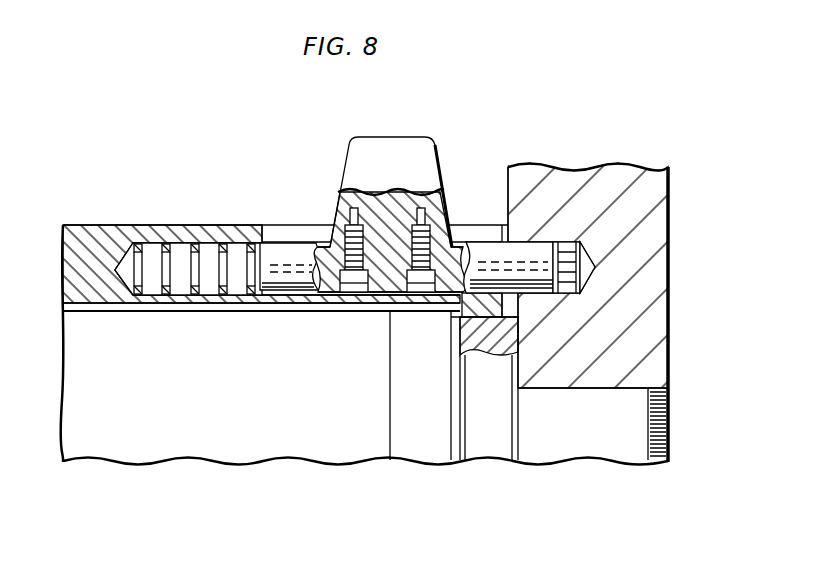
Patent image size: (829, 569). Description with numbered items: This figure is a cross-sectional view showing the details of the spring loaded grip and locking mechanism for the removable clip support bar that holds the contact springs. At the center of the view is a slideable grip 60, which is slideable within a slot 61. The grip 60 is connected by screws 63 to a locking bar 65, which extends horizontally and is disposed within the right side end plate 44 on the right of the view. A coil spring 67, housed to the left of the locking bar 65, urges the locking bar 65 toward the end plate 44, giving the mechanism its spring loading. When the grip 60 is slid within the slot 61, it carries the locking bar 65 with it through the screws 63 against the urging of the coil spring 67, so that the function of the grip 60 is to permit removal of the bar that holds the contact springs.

The right side end plate 44 is at (645, 338).
The slideable grip 60 is at (387, 153).
The slot 61 is at (462, 232).
The screws 63 is at (322, 292).
The locking bar 65 is at (528, 250).
The coil spring 67 is at (150, 268).